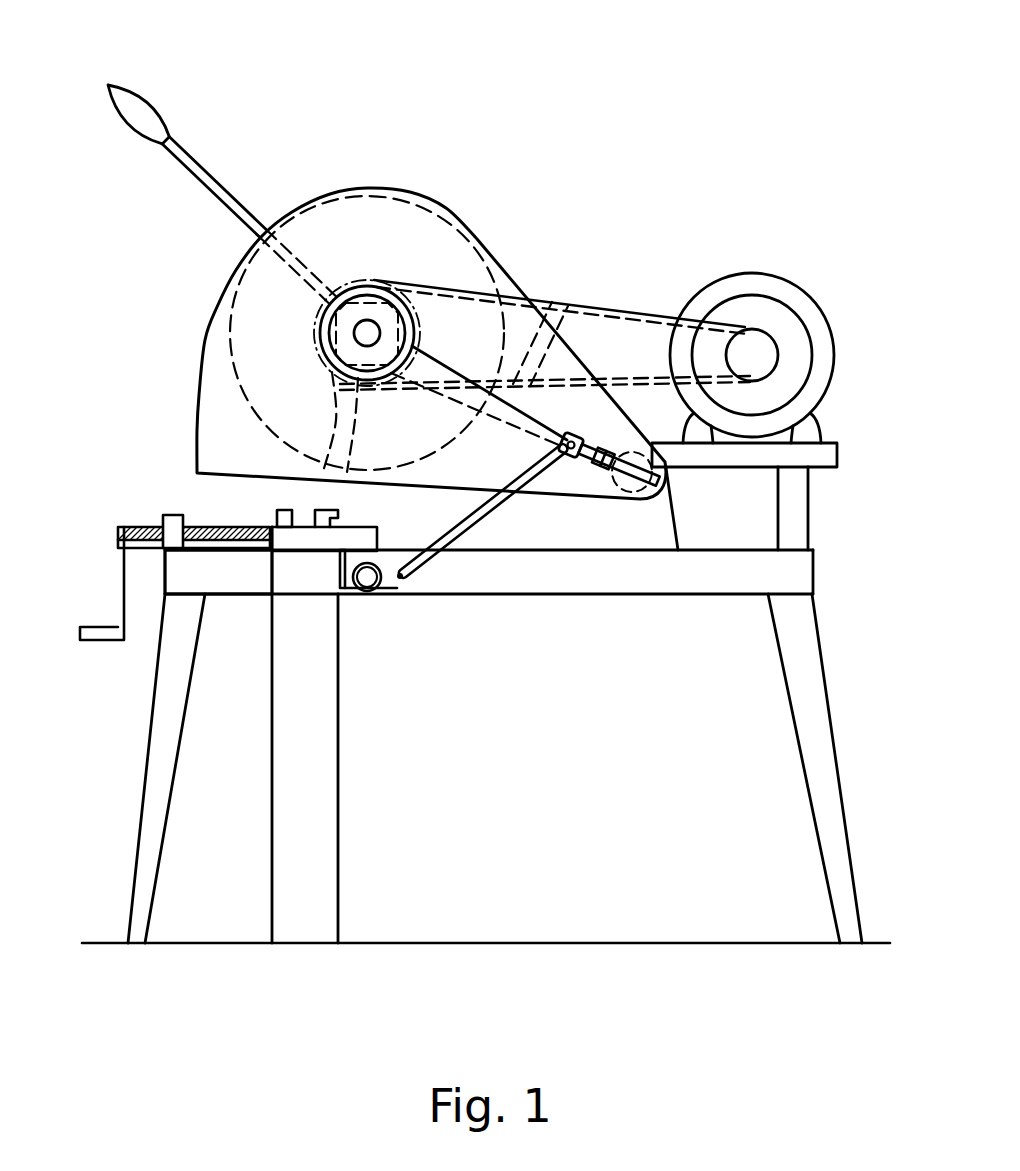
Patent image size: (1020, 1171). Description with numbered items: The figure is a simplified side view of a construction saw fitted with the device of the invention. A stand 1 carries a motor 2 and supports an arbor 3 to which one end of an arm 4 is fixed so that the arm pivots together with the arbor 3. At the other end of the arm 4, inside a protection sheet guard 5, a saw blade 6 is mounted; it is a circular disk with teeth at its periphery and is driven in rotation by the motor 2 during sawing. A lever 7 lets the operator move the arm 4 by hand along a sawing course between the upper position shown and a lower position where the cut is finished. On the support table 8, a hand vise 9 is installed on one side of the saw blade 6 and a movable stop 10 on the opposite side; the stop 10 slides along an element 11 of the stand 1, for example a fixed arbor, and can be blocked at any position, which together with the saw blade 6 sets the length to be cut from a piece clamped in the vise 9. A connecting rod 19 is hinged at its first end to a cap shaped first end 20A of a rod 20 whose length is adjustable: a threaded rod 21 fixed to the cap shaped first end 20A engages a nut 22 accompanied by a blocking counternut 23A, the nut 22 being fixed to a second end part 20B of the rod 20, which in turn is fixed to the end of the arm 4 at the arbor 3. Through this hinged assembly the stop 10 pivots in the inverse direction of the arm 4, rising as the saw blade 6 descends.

The stand 1 is at (776, 668).
The motor 2 is at (822, 298).
The arbor 3 is at (668, 466).
The arm 4 is at (486, 285).
The protection sheet guard 5 is at (465, 227).
The saw blade 6 is at (247, 358).
The lever 7 is at (172, 138).
The support table 8 is at (233, 583).
The hand vise 9 is at (213, 525).
The movable stop 10 is at (320, 545).
The element 11 is at (368, 582).
The connecting rod 19 is at (460, 530).
The rod 20 is at (604, 478).
The cap shaped first end 20A is at (560, 446).
The second end part 20B is at (638, 493).
The threaded rod 21 is at (565, 455).
The nut 22 is at (598, 550).
The blocking counternut 23A is at (593, 466).